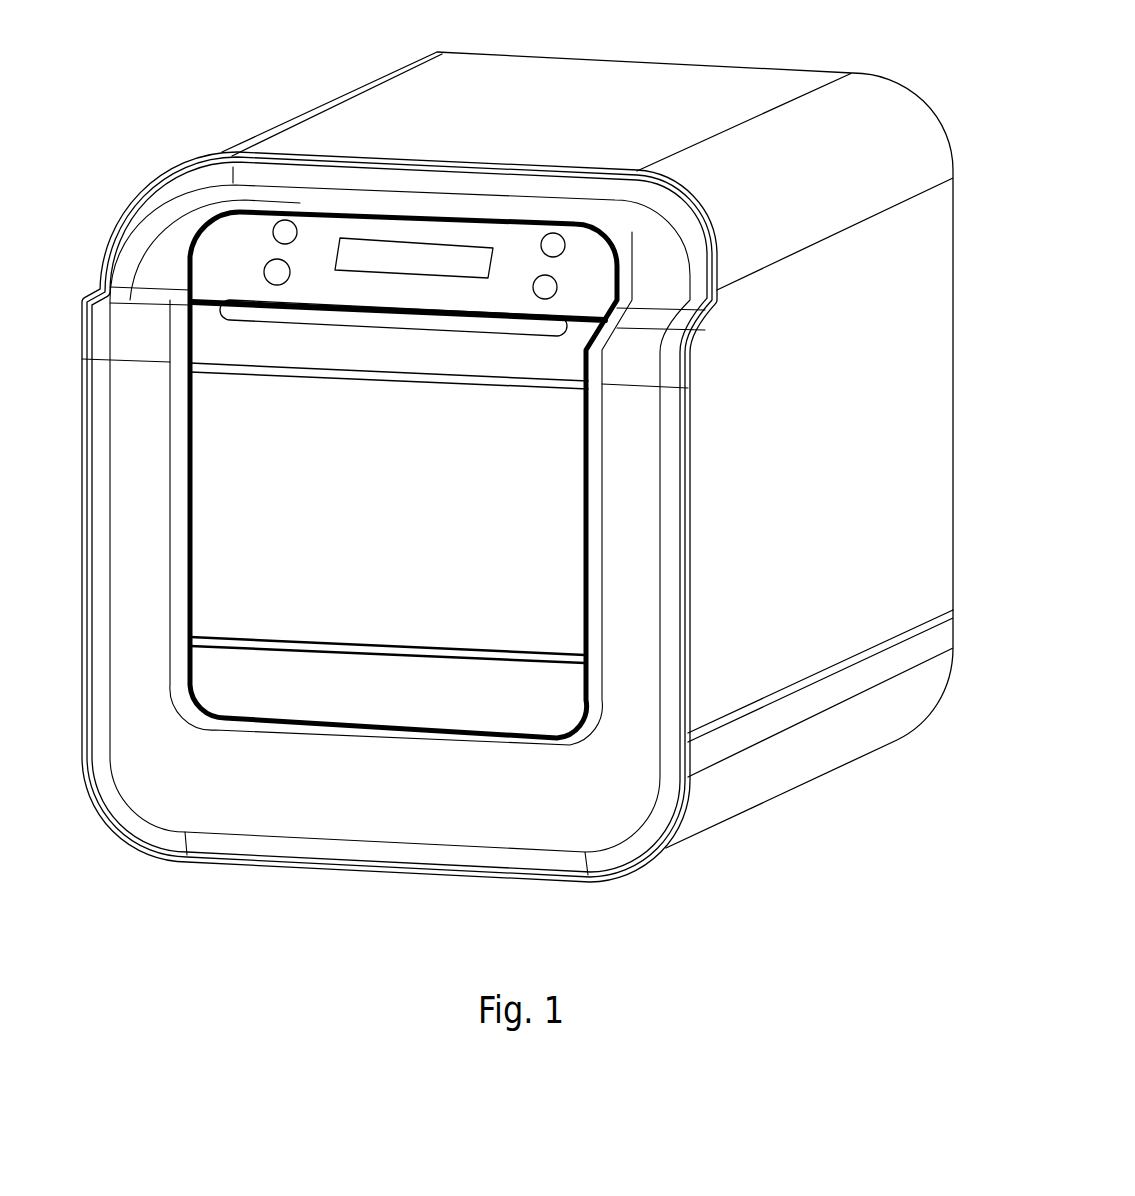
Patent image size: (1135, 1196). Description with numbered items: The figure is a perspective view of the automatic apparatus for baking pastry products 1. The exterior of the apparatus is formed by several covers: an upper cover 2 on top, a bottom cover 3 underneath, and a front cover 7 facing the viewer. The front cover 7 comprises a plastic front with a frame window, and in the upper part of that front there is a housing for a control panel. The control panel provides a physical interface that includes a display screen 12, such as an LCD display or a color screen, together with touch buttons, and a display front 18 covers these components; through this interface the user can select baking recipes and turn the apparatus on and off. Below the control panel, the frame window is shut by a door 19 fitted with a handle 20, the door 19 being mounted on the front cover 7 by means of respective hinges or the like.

The automatic apparatus for baking pastry products 1 is at (495, 487).
The upper cover 2 is at (670, 88).
The bottom cover 3 is at (812, 775).
The front cover 7 is at (78, 283).
The display screen 12 is at (410, 245).
The display front 18 is at (401, 423).
The door 19 is at (389, 558).
The handle 20 is at (300, 315).